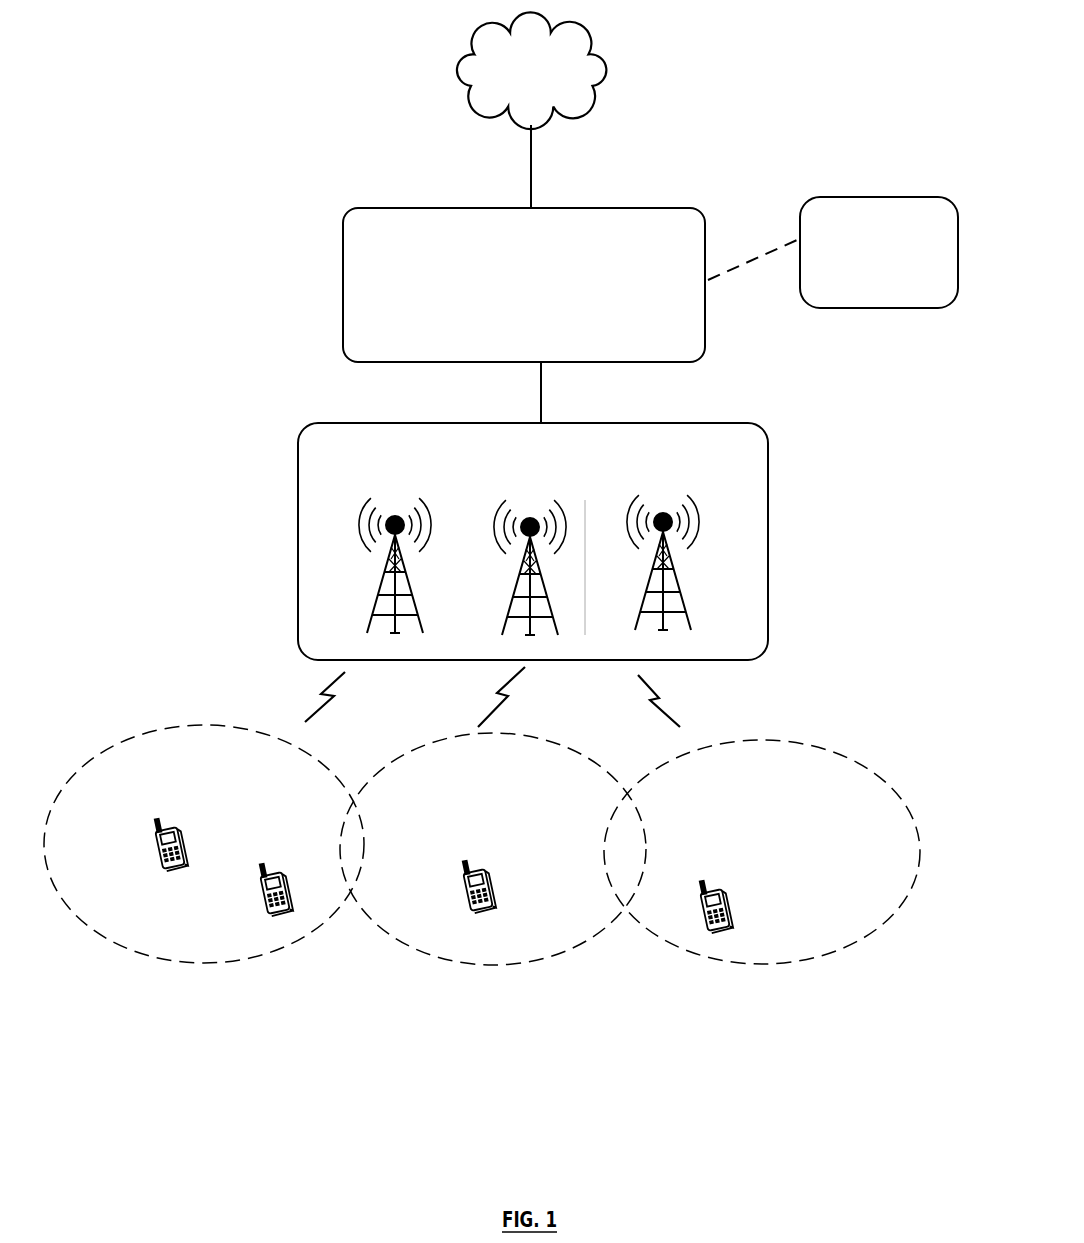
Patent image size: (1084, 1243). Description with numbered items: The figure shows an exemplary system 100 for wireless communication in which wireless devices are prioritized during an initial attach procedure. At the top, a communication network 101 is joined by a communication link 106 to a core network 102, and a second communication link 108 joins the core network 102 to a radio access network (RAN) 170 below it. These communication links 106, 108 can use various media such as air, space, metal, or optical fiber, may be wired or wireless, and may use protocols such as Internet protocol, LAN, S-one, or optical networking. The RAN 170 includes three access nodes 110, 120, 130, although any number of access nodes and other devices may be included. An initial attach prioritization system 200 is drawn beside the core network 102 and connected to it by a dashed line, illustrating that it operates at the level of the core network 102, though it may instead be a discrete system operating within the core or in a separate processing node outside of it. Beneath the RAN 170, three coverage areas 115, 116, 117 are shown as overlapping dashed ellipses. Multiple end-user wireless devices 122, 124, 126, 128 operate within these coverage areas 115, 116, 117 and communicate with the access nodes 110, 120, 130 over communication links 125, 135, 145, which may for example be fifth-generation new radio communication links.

The system 100 is at (745, 34).
The communication network 101 is at (514, 79).
The core network 102 is at (524, 285).
The communication link 106 is at (531, 163).
The communication link 108 is at (541, 396).
The radio access network (RAN) 170 is at (533, 541).
The initial attach prioritization system 200 is at (865, 301).
The access node 110 is at (355, 507).
The access node 120 is at (570, 502).
The access node 130 is at (708, 503).
The communication link 125 is at (322, 690).
The communication link 135 is at (492, 693).
The communication link 145 is at (658, 690).
The coverage area 115 is at (128, 733).
The coverage area 116 is at (430, 743).
The coverage area 117 is at (822, 747).
The wireless device 122 is at (155, 840).
The wireless device 124 is at (272, 872).
The wireless device 126 is at (481, 868).
The wireless device 128 is at (716, 887).